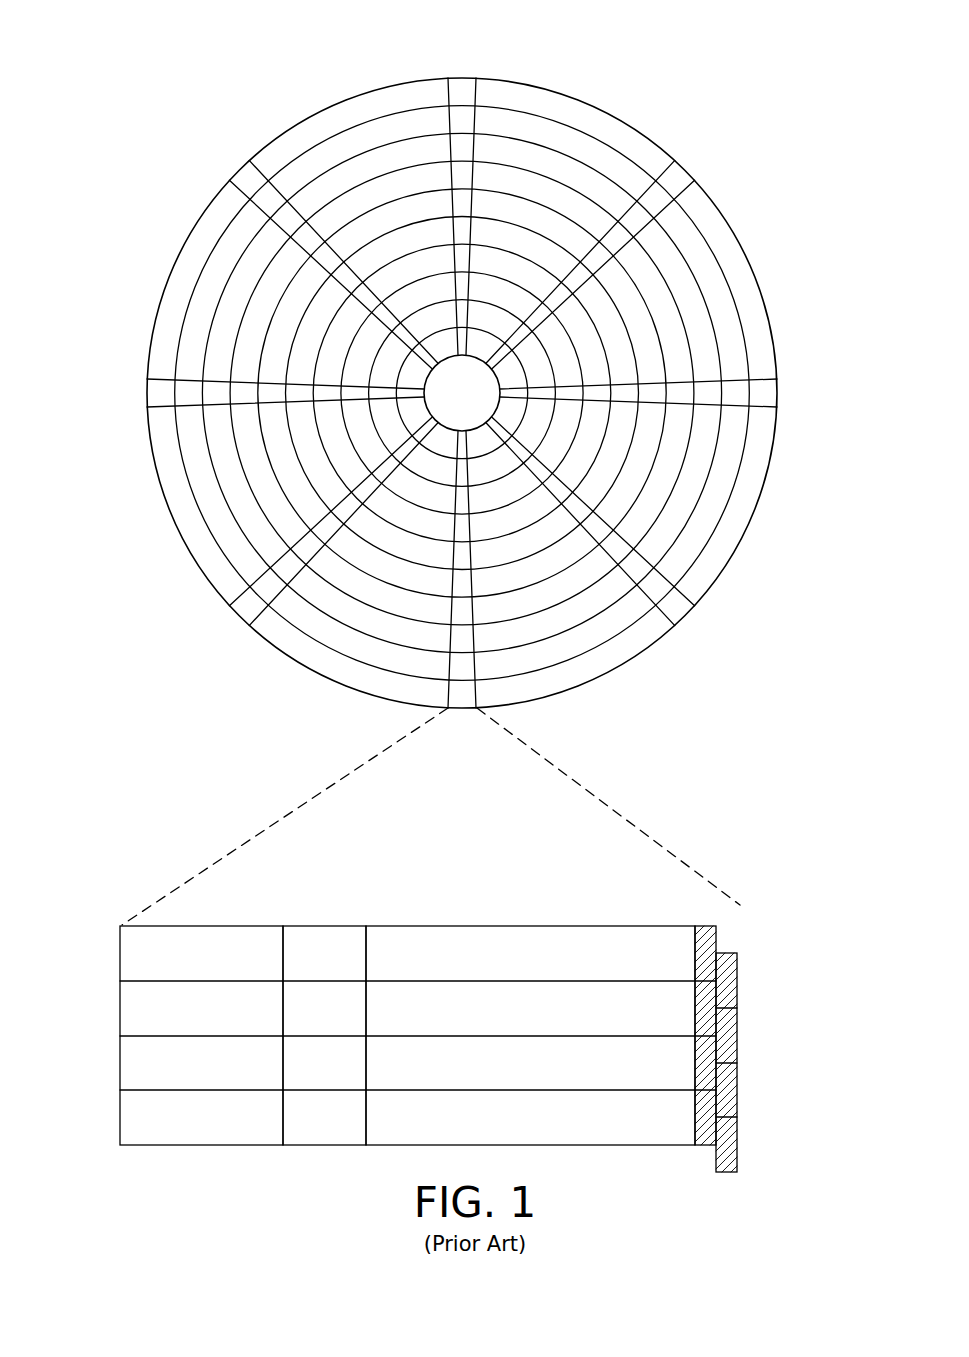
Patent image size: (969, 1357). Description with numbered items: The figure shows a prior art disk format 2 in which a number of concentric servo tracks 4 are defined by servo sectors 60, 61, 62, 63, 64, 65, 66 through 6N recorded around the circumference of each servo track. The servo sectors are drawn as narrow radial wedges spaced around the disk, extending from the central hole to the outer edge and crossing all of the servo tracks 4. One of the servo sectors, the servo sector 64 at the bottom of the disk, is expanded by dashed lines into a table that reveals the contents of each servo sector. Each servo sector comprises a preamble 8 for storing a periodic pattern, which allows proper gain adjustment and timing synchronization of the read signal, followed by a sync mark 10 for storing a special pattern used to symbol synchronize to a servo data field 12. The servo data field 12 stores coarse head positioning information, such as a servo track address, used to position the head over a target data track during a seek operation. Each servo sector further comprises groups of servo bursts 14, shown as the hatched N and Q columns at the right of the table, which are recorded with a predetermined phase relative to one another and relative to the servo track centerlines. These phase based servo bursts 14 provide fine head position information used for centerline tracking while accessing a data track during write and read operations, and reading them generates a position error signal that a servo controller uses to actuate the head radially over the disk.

The disk format 2 is at (231, 82).
The servo tracks 4 is at (571, 141).
The servo sector 60 is at (462, 78).
The servo sector 61 is at (680, 180).
The servo sector 62 is at (770, 393).
The servo sector 63 is at (682, 614).
The servo sector 64 is at (322, 782).
The servo sector 65 is at (243, 611).
The servo sector 66 is at (152, 390).
The servo sector 6N is at (246, 176).
The preamble 8 is at (209, 926).
The sync mark 10 is at (329, 926).
The servo data field 12 is at (518, 926).
The servo bursts 14 is at (733, 921).